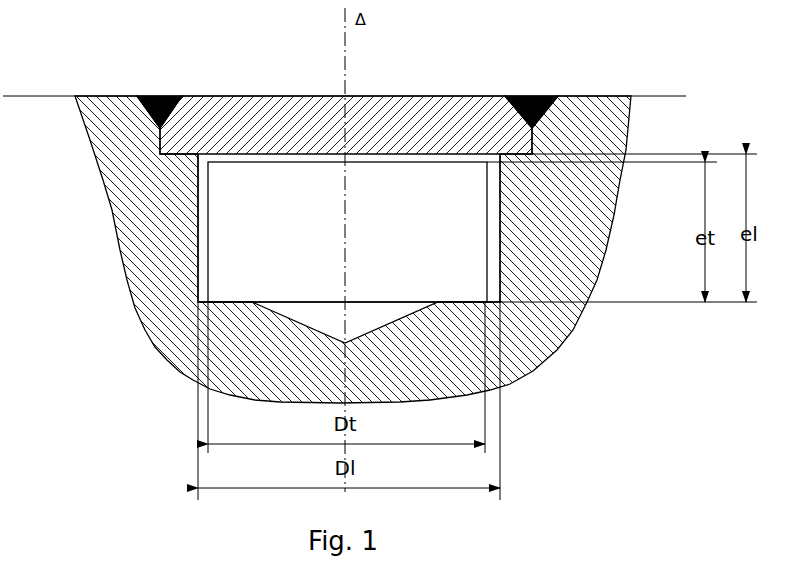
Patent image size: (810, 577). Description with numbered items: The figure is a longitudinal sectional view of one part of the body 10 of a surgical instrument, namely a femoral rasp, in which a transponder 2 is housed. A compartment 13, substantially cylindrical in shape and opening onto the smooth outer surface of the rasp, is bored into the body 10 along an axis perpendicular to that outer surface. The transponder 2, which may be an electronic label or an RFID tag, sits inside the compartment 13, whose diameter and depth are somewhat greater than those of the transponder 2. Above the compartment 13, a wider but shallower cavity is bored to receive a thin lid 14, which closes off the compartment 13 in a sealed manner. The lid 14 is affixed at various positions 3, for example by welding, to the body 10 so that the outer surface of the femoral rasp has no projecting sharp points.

The transponder 2 is at (258, 205).
The positions 3 is at (157, 95).
The body 10 is at (570, 232).
The compartment 13 is at (200, 215).
The lid 14 is at (425, 113).